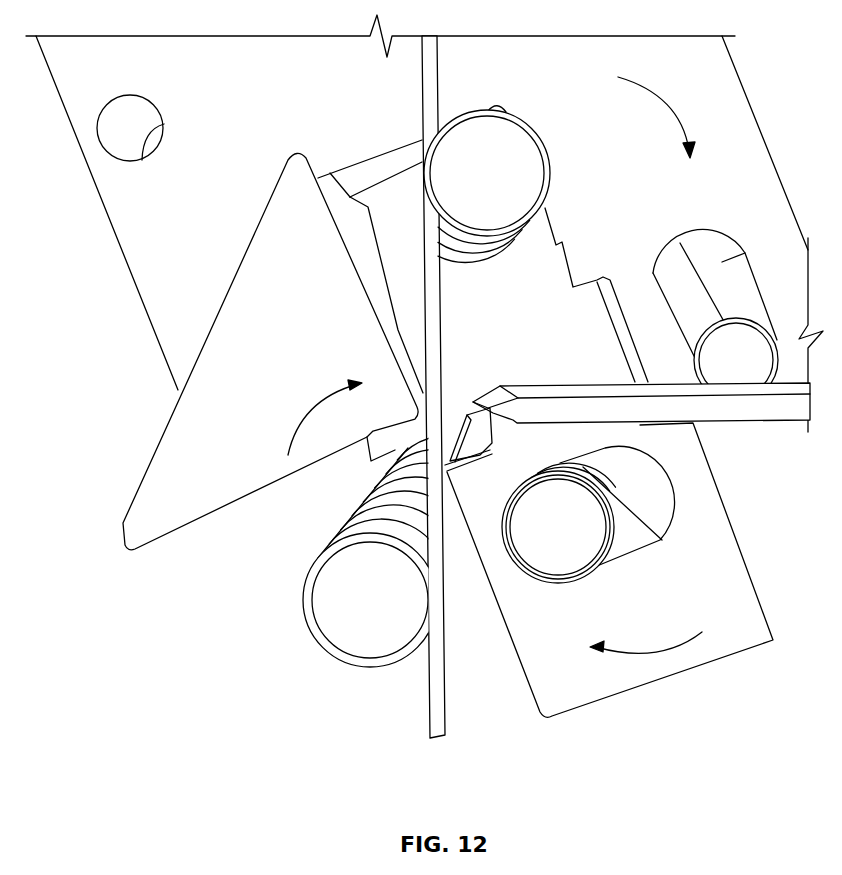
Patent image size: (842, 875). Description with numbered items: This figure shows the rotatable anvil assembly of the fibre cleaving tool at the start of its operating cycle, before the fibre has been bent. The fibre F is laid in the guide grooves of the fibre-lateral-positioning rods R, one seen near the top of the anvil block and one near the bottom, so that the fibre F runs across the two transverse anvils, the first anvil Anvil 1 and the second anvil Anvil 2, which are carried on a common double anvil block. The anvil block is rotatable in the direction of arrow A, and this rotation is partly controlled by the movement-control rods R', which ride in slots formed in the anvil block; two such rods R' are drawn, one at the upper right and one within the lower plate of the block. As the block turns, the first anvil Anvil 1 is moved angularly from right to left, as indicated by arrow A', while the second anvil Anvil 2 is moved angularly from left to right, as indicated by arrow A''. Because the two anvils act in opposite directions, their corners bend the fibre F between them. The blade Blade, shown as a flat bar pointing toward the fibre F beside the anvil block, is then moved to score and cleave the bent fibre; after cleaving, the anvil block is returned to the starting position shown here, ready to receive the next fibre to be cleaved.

The fibre-lateral-positioning rod R is at (426, 386).
The movement-control rod R' is at (640, 406).
The fibre F is at (432, 718).
The blade Blade is at (481, 393).
The anvil 1 Anvil 1 is at (582, 690).
The anvil 2 Anvil 2 is at (200, 512).
The arrow A is at (656, 112).
The arrow A' is at (646, 660).
The arrow A" A'' is at (312, 416).